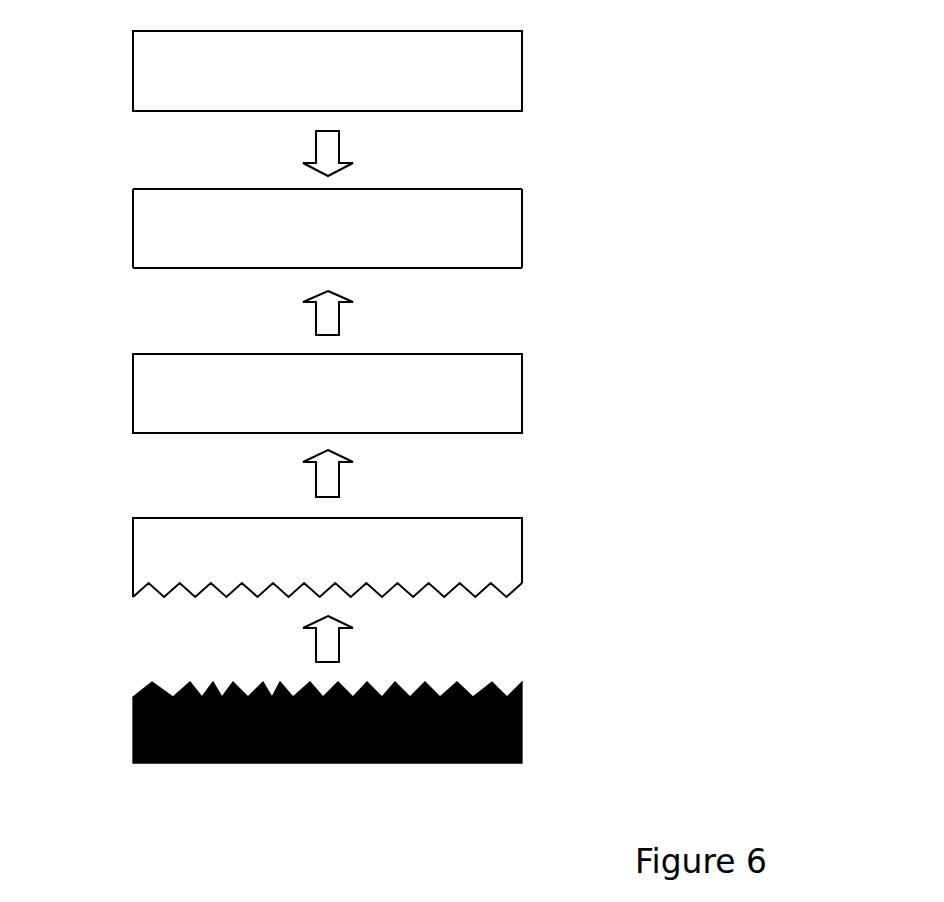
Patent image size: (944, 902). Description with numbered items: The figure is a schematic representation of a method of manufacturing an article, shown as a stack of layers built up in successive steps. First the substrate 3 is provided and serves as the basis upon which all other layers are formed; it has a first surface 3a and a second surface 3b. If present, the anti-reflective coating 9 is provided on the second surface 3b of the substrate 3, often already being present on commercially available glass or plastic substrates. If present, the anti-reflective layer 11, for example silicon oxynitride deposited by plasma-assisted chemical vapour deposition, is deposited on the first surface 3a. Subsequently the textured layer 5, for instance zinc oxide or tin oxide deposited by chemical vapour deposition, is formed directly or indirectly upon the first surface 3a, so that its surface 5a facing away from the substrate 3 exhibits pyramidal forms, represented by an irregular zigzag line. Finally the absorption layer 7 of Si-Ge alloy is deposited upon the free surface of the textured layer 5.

The anti-reflective coating 9 is at (153, 50).
The substrate 3 is at (328, 228).
The first surface 3a is at (495, 268).
The second surface 3b is at (491, 191).
The anti-reflective layer 11 is at (144, 399).
The textured layer 5 is at (320, 557).
The surface of the textured layer 5a is at (503, 586).
The absorption layer 7 is at (133, 735).